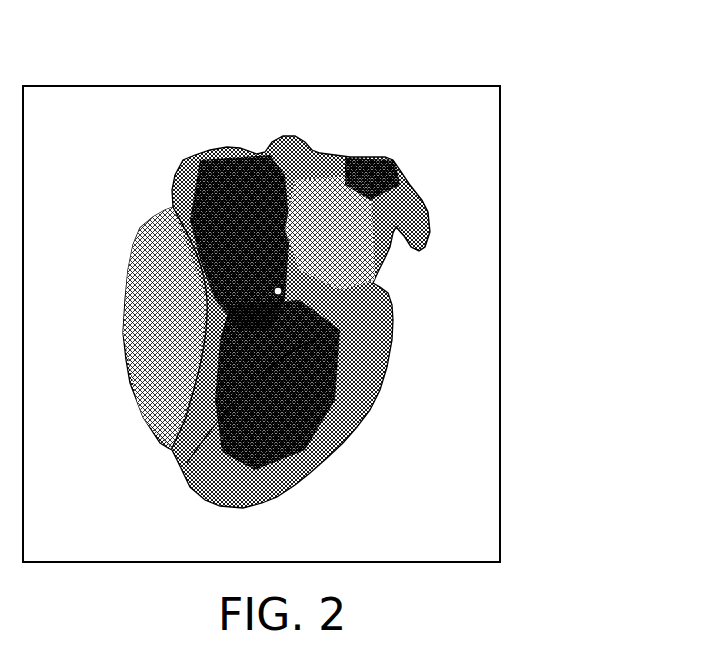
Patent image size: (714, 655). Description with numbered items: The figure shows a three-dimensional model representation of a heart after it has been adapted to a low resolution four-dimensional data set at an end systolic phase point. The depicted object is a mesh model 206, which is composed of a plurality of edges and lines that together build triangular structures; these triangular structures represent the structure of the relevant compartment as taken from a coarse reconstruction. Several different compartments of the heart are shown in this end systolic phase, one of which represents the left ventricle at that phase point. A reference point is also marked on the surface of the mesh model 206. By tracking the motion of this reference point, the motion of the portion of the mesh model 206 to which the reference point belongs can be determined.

The mesh model 206 is at (514, 307).